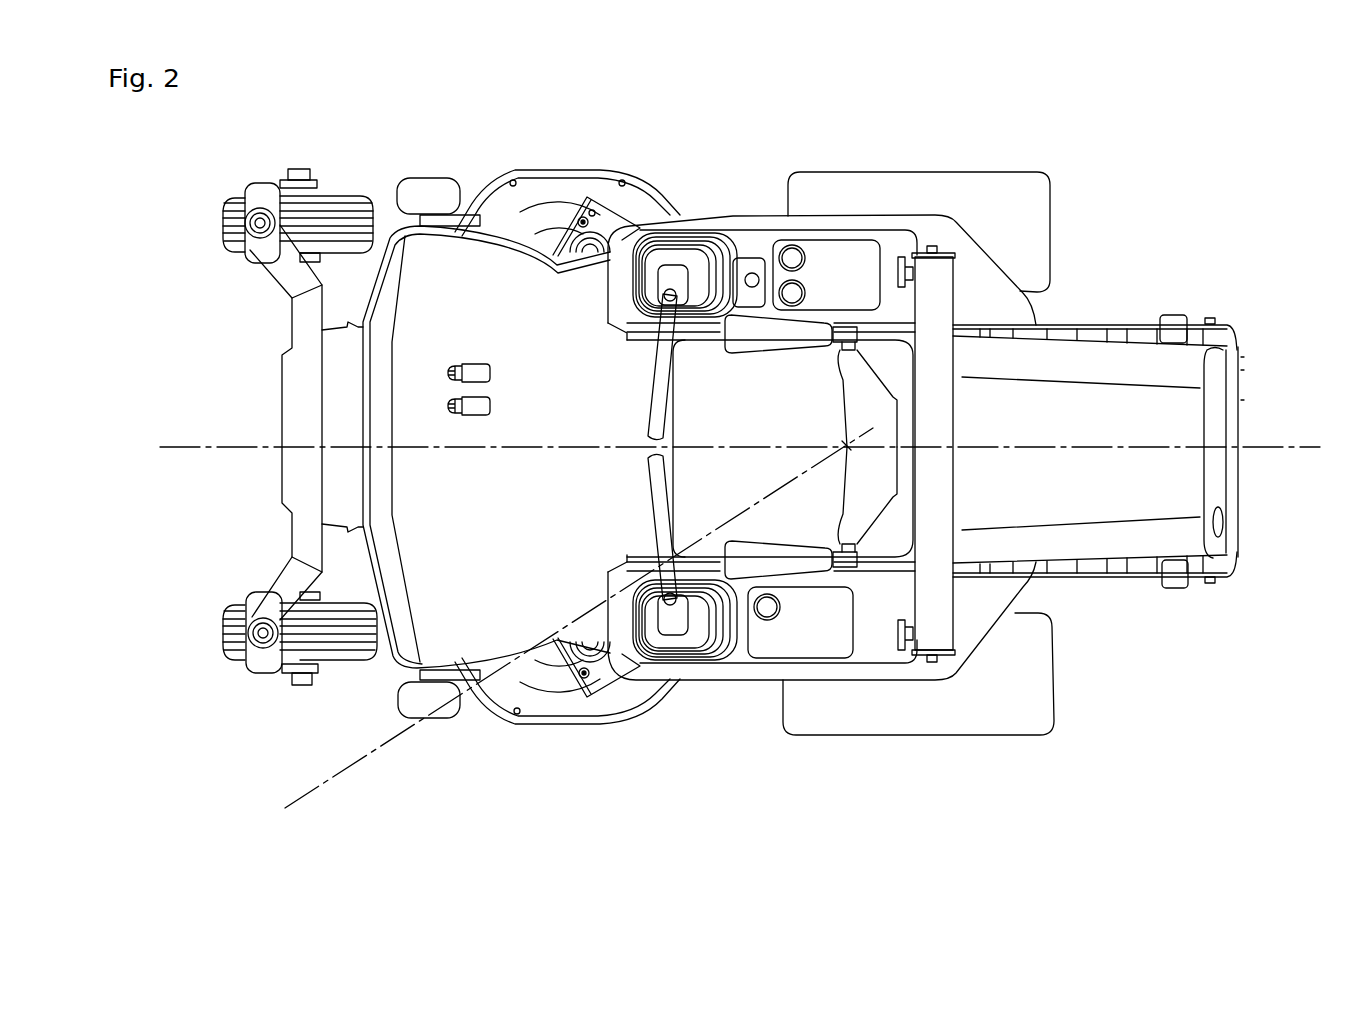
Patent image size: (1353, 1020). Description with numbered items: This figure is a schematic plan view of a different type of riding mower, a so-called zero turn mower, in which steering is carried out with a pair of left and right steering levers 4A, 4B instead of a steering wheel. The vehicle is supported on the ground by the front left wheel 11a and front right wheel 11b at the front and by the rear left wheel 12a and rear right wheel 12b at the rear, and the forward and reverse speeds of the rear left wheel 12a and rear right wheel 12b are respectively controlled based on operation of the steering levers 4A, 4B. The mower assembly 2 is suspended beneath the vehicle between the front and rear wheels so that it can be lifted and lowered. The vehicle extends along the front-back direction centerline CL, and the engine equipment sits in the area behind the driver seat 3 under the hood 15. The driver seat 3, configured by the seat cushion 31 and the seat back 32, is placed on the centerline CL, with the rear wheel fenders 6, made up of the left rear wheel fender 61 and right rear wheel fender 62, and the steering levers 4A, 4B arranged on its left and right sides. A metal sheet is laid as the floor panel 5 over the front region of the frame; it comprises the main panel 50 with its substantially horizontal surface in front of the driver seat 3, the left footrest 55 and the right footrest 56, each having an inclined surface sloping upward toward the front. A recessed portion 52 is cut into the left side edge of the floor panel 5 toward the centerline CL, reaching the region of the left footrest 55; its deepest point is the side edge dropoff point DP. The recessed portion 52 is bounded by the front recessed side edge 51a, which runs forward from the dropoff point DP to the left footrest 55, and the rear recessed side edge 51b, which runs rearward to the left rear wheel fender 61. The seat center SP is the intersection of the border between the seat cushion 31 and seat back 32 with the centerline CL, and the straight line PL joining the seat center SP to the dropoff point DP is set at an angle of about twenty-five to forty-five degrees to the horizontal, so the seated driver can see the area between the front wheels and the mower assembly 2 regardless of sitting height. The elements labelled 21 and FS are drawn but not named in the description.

The mower assembly 2 is at (668, 778).
The driver seat 3 is at (752, 307).
The left steering lever 4A is at (650, 493).
The right steering lever 4B is at (652, 372).
The floor panel 5 is at (413, 402).
The rear wheel fenders 6 is at (828, 687).
The front left wheel 11a is at (240, 634).
The front right wheel 11b is at (238, 221).
The rear left wheel 12a is at (907, 727).
The rear right wheel 12b is at (915, 177).
The hood 15 is at (1108, 333).
The stopper / bumper 21 is at (413, 185).
The seat cushion 31 is at (687, 410).
The seat back 32 is at (895, 413).
The main panel 50 is at (565, 441).
The front recessed side edge 51a is at (540, 232).
The rear recessed side edge 51b is at (571, 252).
The recessed portion 52 is at (552, 232).
The left footrest 55 is at (470, 583).
The right footrest 56 is at (470, 334).
The left rear wheel fender 61 is at (855, 682).
The right rear wheel fender 62 is at (815, 220).
The front step FS is at (382, 198).
The seat center SP is at (846, 445).
The straight line PL is at (693, 533).
The side edge dropoff point DP is at (565, 638).
The front-back direction centerline CL is at (1273, 452).